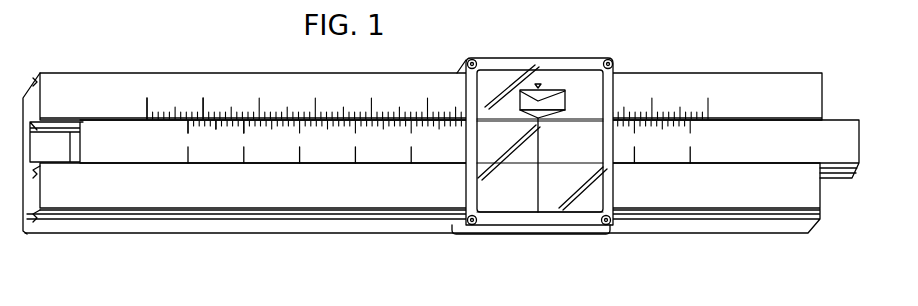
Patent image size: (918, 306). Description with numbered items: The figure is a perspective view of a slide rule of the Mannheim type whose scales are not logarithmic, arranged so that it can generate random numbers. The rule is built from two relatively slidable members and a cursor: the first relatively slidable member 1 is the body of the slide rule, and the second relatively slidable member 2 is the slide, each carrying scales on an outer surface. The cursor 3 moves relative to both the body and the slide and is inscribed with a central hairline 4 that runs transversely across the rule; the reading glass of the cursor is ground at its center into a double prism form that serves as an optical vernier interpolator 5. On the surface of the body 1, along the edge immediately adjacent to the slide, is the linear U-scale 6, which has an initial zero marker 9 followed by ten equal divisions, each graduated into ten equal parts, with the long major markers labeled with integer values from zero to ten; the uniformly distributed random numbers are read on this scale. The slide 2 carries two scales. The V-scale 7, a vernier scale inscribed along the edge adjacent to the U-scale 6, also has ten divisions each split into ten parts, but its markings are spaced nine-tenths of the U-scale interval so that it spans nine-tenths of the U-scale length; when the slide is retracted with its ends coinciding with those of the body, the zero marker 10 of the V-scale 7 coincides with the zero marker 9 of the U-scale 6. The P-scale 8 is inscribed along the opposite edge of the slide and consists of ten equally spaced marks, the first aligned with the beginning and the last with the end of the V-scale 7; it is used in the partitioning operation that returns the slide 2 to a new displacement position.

The first relatively slidable member 1 is at (769, 82).
The second relatively slidable member 2 is at (852, 130).
The cursor 3 is at (591, 230).
The central hairline 4 is at (539, 188).
The optical vernier interpolator 5 is at (556, 90).
The U-scale 6 is at (194, 101).
The V-scale 7 is at (228, 131).
The P-scale 8 is at (292, 155).
The zero marker 9 is at (147, 103).
The zero marker 10 is at (187, 131).